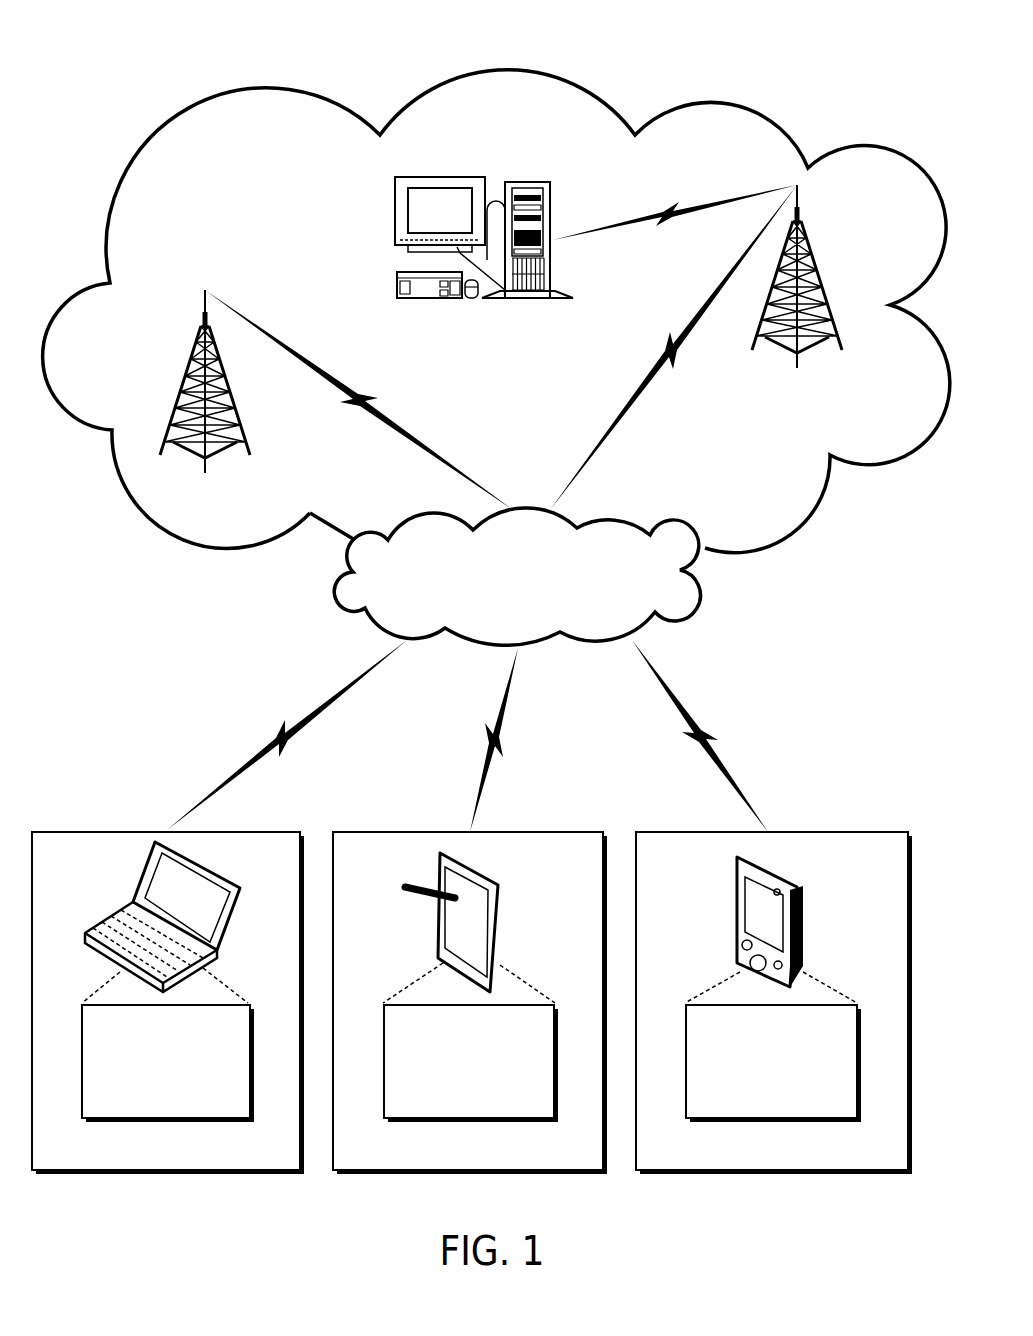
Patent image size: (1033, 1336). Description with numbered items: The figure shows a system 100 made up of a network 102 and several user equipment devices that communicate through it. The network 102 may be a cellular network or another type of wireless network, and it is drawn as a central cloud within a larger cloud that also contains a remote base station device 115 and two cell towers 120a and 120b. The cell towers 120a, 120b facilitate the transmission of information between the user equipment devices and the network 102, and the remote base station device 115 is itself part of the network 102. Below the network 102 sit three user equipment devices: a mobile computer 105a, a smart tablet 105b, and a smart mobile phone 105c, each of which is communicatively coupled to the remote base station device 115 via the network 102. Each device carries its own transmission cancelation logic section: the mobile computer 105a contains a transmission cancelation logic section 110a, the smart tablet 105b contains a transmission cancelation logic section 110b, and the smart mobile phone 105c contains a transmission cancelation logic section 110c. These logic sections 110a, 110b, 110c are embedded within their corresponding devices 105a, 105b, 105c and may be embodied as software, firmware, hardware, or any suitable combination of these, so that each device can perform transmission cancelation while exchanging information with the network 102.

The system 100 is at (88, 93).
The network 102 is at (517, 576).
The mobile computer 105a is at (212, 863).
The smart tablet 105b is at (473, 863).
The smart mobile phone 105c is at (785, 865).
The transmission cancelation logic section 110a is at (167, 1118).
The transmission cancelation logic section 110b is at (470, 1118).
The transmission cancelation logic section 110c is at (770, 1118).
The remote base station device 115 is at (423, 177).
The cell tower 120a is at (190, 360).
The cell tower 120b is at (812, 262).